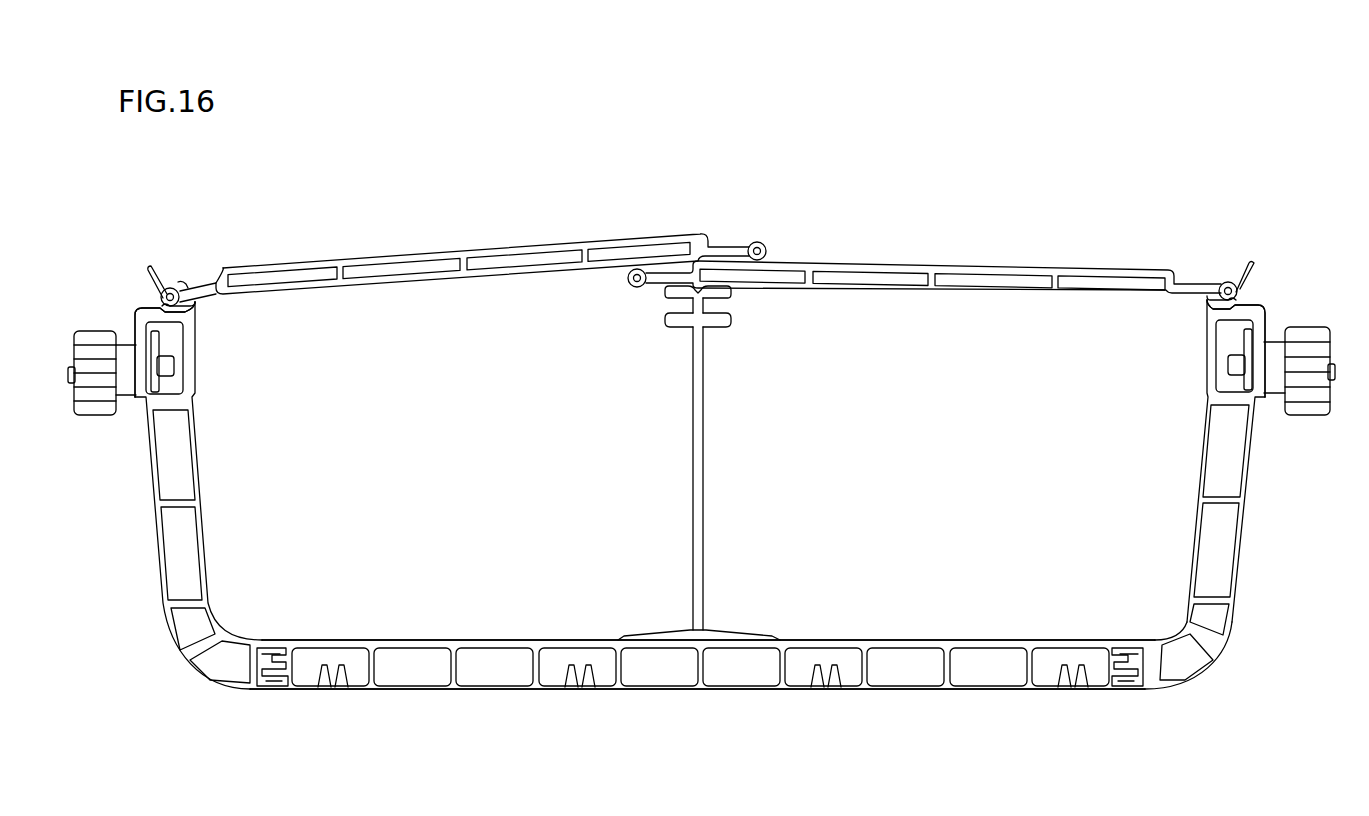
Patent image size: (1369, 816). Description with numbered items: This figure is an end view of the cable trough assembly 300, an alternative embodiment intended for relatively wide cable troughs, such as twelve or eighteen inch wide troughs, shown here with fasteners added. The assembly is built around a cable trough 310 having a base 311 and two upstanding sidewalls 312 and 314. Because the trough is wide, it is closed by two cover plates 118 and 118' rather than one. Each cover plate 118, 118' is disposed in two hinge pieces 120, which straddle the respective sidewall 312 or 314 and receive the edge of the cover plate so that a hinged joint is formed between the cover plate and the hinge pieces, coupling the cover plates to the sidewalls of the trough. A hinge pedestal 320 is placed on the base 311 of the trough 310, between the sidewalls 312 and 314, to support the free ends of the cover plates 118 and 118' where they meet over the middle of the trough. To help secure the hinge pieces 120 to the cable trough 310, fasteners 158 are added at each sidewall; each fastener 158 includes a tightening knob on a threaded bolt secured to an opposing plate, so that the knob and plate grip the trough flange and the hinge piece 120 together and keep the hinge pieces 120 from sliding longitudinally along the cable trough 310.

The cable trough assembly 300 is at (1081, 198).
The cover plate 118 is at (924, 250).
The cover plate 118' is at (472, 254).
The hinge piece 120 is at (148, 306).
The fastener 158 is at (104, 420).
The cable trough 310 is at (1193, 675).
The base 311 is at (458, 640).
The sidewall 312 is at (1245, 518).
The sidewall 314 is at (155, 478).
The hinge pedestal 320 is at (705, 497).